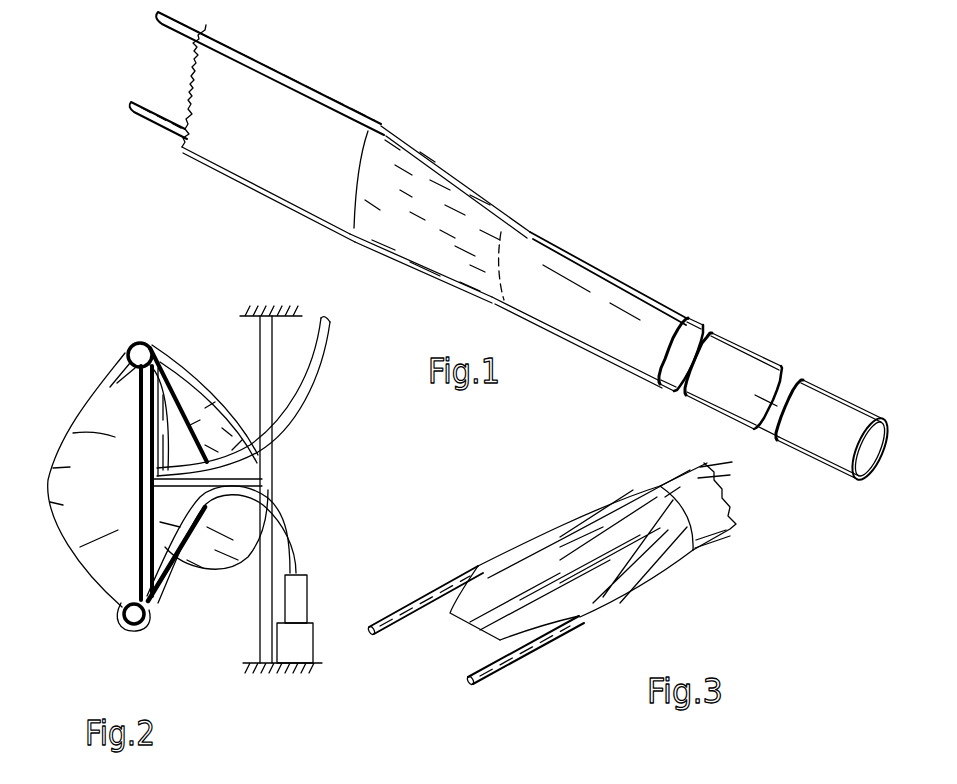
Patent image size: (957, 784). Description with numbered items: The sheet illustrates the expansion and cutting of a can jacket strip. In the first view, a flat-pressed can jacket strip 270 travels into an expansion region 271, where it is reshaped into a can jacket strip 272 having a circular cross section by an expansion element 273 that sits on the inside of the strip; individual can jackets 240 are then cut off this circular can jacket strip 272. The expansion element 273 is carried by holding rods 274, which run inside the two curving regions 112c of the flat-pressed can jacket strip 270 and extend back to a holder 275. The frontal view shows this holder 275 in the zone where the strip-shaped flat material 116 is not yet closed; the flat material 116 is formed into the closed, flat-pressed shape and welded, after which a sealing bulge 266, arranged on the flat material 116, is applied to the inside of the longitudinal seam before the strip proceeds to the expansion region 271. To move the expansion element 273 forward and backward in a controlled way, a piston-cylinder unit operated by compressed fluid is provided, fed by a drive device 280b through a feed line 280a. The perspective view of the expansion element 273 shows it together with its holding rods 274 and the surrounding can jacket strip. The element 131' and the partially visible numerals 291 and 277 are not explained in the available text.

In FIG. 1, the curving regions 112c is at (208, 22).
In FIG. 1, the holding rods 274 is at (158, 107).
In FIG. 2, the holding rods 274 is at (139, 338).
In FIG. 3, the holding rods 274 is at (485, 667).
In FIG. 1, the flat-pressed can jacket strip 270 is at (324, 77).
In FIG. 2, the flat-pressed can jacket strip 270 is at (165, 520).
In FIG. 1, the expansion region 271 is at (464, 165).
In FIG. 2, the expansion region 271 is at (98, 495).
In FIG. 1, the can jacket strip with circular cross section 272 is at (622, 263).
In FIG. 2, the can jacket strip with circular cross section 272 is at (61, 430).
In FIG. 1, the can jackets 240 is at (831, 385).
In FIG. 2, the holder 275 is at (260, 352).
In FIG. 2, the sealing bulge 266 is at (211, 458).
In FIG. 2, the flat material 116 is at (178, 585).
In FIG. 2, the curved guide band 131' is at (263, 396).
In FIG. 2, the feed line 280a is at (295, 529).
In FIG. 2, the drive device 280b is at (319, 605).
In FIG. 3, the expansion element 273 is at (578, 513).
In FIG. 3, the element 291 is at (400, 783).
In FIG. 3, the element 277 is at (646, 772).